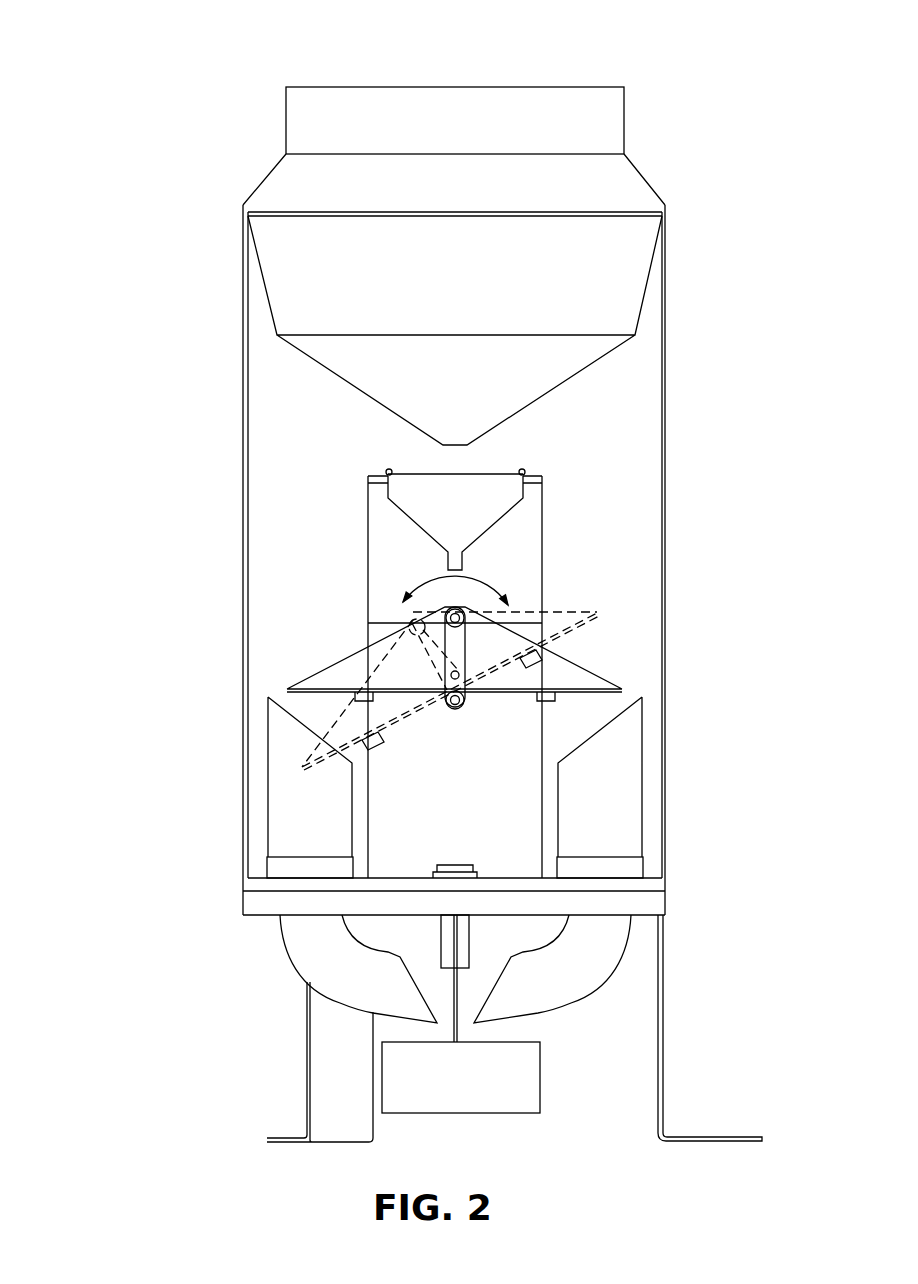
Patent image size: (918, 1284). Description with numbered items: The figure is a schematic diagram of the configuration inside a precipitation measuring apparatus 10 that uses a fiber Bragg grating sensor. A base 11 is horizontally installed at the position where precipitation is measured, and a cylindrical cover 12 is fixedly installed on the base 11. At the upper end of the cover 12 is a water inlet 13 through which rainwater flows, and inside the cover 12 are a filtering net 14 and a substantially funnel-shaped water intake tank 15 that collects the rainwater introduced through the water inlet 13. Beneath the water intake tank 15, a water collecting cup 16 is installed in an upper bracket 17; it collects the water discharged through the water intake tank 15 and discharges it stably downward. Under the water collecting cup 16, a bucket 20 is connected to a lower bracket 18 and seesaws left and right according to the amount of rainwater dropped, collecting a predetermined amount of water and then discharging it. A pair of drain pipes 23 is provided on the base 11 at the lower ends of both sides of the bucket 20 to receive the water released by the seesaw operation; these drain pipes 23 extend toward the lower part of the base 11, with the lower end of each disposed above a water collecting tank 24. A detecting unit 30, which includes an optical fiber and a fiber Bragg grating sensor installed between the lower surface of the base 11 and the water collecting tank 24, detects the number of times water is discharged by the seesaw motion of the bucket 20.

The precipitation measuring apparatus 10 is at (108, 135).
The base 11 is at (653, 901).
The cover 12 is at (230, 425).
The water inlet 13 is at (514, 108).
The filtering net 14 is at (596, 212).
The water intake tank 15 is at (643, 302).
The water collecting cup 16 is at (503, 517).
The upper bracket 17 is at (525, 569).
The lower bracket 18 is at (505, 825).
The bucket 20 is at (578, 663).
The drain pipes 23 is at (622, 767).
The water collecting tank 24 is at (519, 1074).
The detecting unit 30 is at (440, 993).